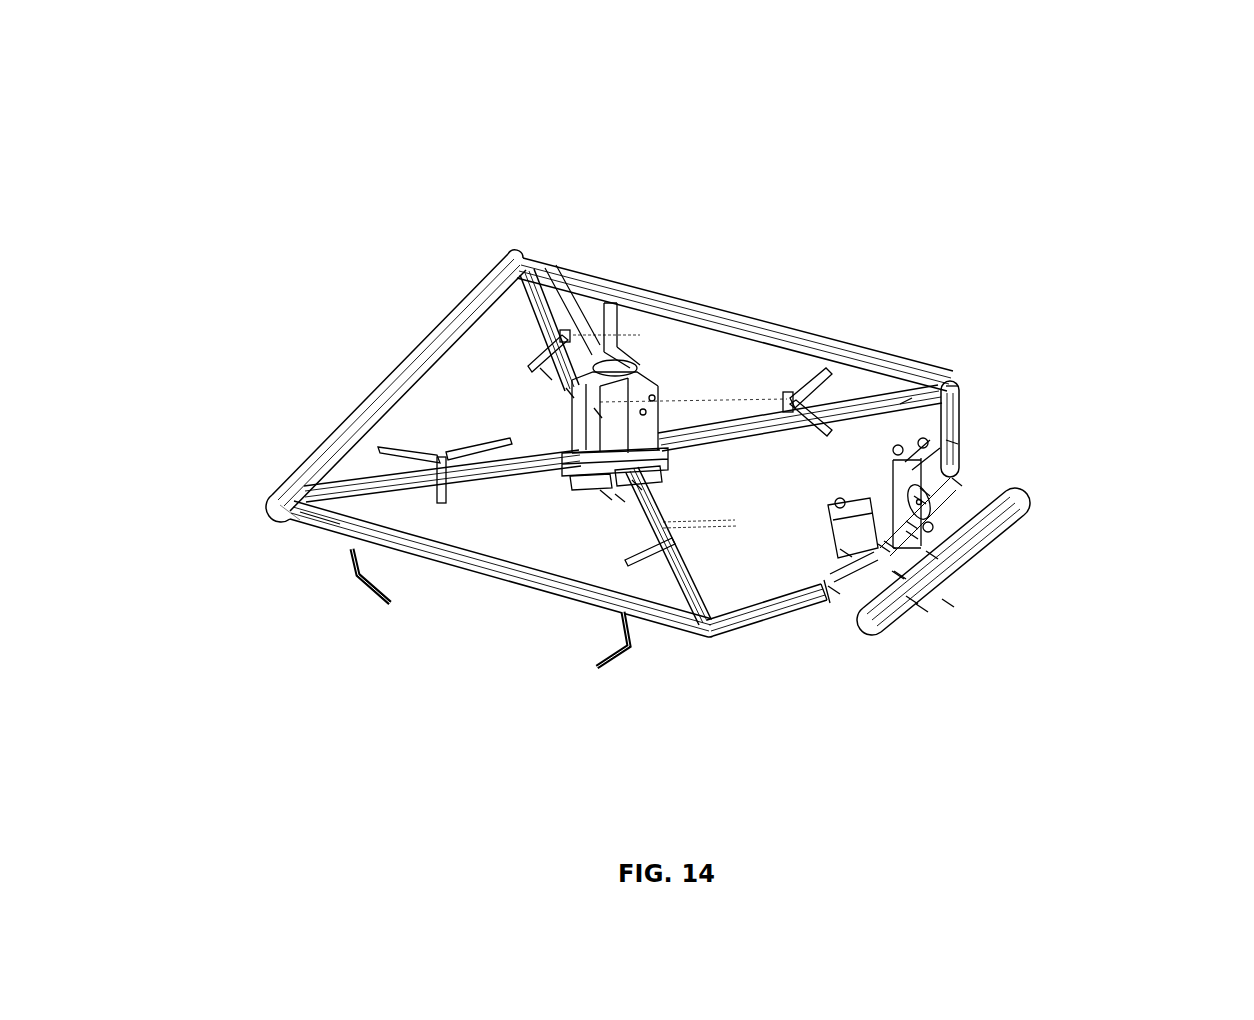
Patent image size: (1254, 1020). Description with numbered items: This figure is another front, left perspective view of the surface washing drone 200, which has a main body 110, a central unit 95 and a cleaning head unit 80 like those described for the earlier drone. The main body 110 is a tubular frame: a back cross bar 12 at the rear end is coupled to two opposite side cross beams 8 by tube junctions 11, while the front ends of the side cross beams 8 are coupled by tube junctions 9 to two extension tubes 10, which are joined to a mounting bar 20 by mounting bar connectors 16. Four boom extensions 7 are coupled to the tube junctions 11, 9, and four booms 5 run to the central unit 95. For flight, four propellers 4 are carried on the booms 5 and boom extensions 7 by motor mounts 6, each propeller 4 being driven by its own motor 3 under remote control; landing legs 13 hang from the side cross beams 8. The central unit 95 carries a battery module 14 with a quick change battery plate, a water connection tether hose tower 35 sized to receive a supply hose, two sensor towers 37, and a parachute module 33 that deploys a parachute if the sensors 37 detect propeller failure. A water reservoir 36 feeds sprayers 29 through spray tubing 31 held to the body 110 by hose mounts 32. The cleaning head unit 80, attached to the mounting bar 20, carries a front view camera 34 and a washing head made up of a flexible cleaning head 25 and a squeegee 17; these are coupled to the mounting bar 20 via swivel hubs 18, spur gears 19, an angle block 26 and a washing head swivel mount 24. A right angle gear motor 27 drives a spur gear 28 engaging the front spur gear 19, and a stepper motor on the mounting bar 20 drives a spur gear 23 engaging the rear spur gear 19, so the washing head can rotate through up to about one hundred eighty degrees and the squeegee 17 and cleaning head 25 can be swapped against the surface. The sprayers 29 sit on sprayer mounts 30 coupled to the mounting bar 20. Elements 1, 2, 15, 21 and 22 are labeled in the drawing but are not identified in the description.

The drone 200 is at (235, 103).
The main body 110 is at (438, 313).
The central unit 95 is at (650, 360).
The cleaning head unit 80 is at (962, 492).
The cross tube 1 is at (555, 450).
The lower bracket 2 is at (620, 498).
The motor 3 is at (652, 505).
The propeller 4 is at (335, 466).
The boom 5 is at (720, 405).
The motor mount 6 is at (552, 370).
The boom extension 7 is at (906, 400).
The side cross beam 8 is at (735, 335).
The tube junction 9 is at (700, 640).
The extension tube 10 is at (952, 442).
The tube junction 11 is at (526, 270).
The back cross bar 12 is at (570, 393).
The landing leg 13 is at (612, 335).
The battery module 14 is at (350, 522).
The bracket 15 is at (608, 495).
The mounting bar connector 16 is at (834, 590).
The squeegee 17 is at (912, 600).
The swivel hub 18 is at (890, 545).
The spur gear 19 is at (932, 555).
The mounting bar 20 is at (958, 482).
The motor 21 is at (884, 548).
The roller shaft 22 is at (898, 575).
The spur gear 23 is at (920, 500).
The washing head swivel mount 24 is at (922, 608).
The cleaning head 25 is at (900, 575).
The angle block 26 is at (948, 603).
The right angle gear motor 27 is at (912, 525).
The spur gear 28 is at (912, 535).
The sprayer 29 is at (855, 500).
The sprayer mount 30 is at (925, 492).
The spray tubing 31 is at (846, 553).
The hose mount 32 is at (636, 485).
The parachute module 33 is at (630, 362).
The front view camera 34 is at (952, 390).
The water connection tether hose tower 35 is at (598, 413).
The water reservoir 36 is at (518, 260).
The sensor tower 37 is at (545, 372).